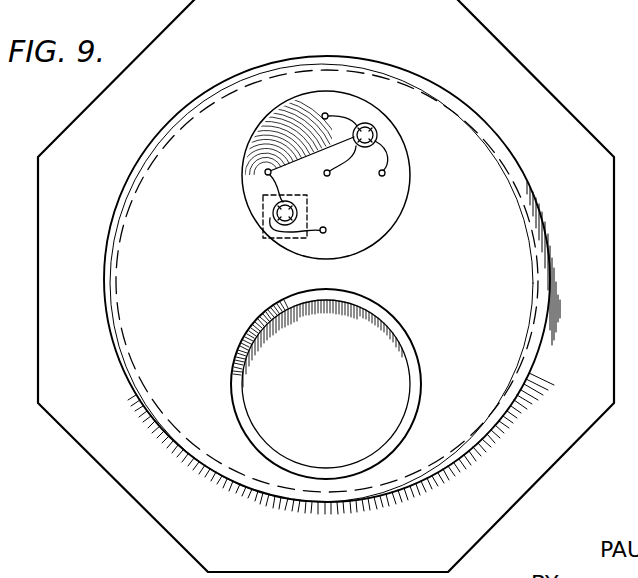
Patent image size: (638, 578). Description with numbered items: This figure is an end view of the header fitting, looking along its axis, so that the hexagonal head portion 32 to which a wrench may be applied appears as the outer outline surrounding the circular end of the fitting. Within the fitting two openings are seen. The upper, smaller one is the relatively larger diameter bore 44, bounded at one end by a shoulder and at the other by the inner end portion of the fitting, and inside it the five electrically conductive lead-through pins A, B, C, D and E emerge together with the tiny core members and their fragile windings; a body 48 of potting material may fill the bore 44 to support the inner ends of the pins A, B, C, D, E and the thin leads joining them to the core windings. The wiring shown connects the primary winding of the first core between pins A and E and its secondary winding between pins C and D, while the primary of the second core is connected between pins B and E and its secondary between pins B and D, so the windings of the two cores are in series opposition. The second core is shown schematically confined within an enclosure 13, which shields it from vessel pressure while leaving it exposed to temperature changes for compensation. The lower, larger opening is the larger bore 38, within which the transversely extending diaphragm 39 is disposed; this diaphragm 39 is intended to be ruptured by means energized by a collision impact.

The hexagonal head portion 32 is at (538, 80).
The bore 44 is at (374, 108).
The body of potting material 48 is at (383, 218).
The enclosure 13 is at (292, 240).
The larger bore 38 is at (405, 353).
The diaphragm 39 is at (336, 419).
The electrically conductive pin A is at (326, 114).
The electrically conductive pin B is at (326, 233).
The electrically conductive pin C is at (385, 173).
The electrically conductive pin D is at (329, 176).
The electrically conductive pin E is at (266, 172).